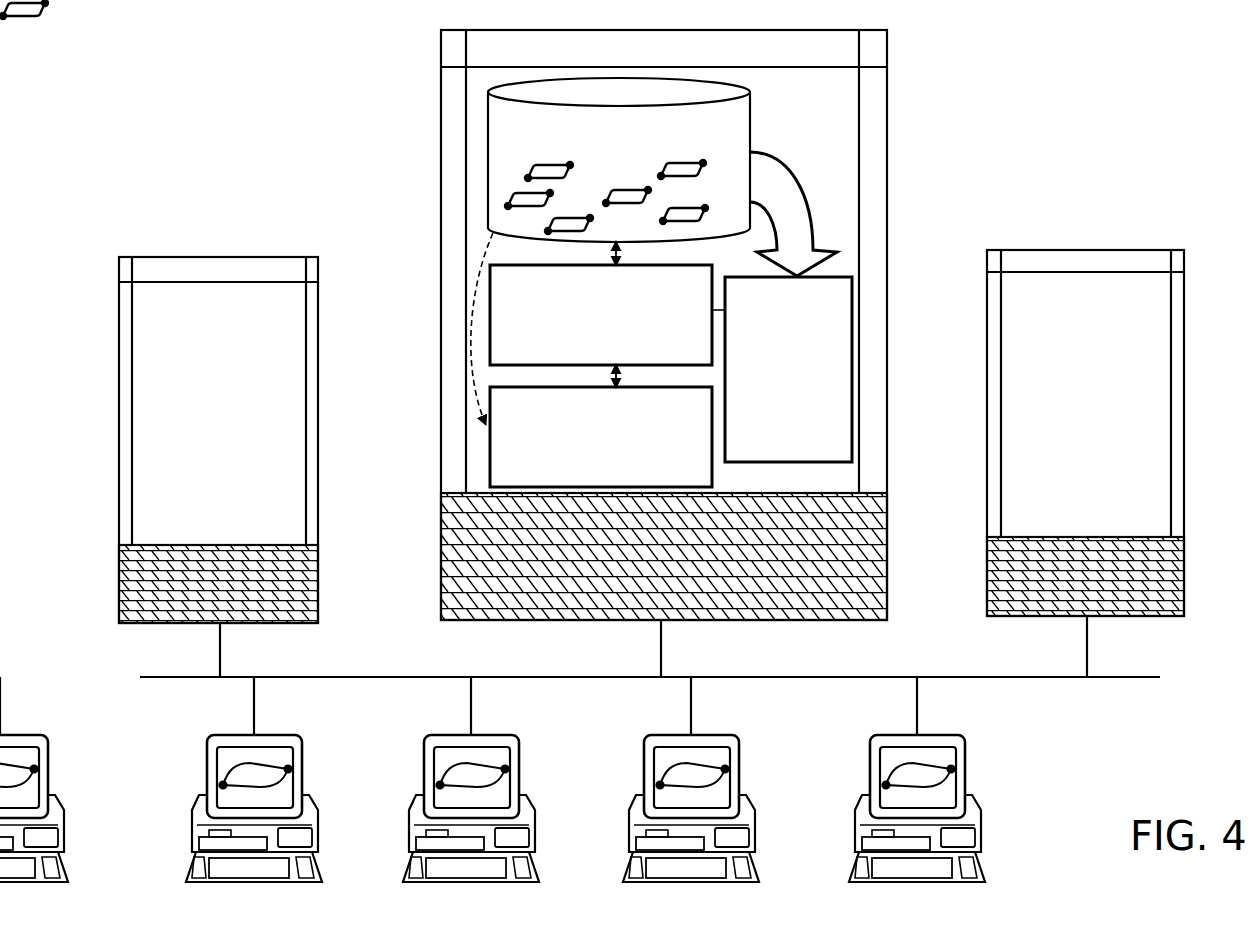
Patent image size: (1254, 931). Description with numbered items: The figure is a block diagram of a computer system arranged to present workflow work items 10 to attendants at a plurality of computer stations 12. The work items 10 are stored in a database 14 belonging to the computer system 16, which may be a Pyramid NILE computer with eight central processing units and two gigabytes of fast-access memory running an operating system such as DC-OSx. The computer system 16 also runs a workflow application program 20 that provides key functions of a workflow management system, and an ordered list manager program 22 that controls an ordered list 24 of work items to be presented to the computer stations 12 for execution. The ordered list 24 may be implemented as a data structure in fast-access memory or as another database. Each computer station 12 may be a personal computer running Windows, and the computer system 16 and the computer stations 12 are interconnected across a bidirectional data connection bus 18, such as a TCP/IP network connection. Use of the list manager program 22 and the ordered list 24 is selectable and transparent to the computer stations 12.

The workflow work item 10 is at (573, 174).
The computer station 12 is at (310, 817).
The database 14 is at (751, 105).
The computer system 16 is at (889, 148).
The bidirectional data connection bus 18 is at (803, 678).
The workflow application program 20 is at (680, 478).
The ordered list manager program 22 is at (680, 354).
The ordered list 24 is at (817, 455).